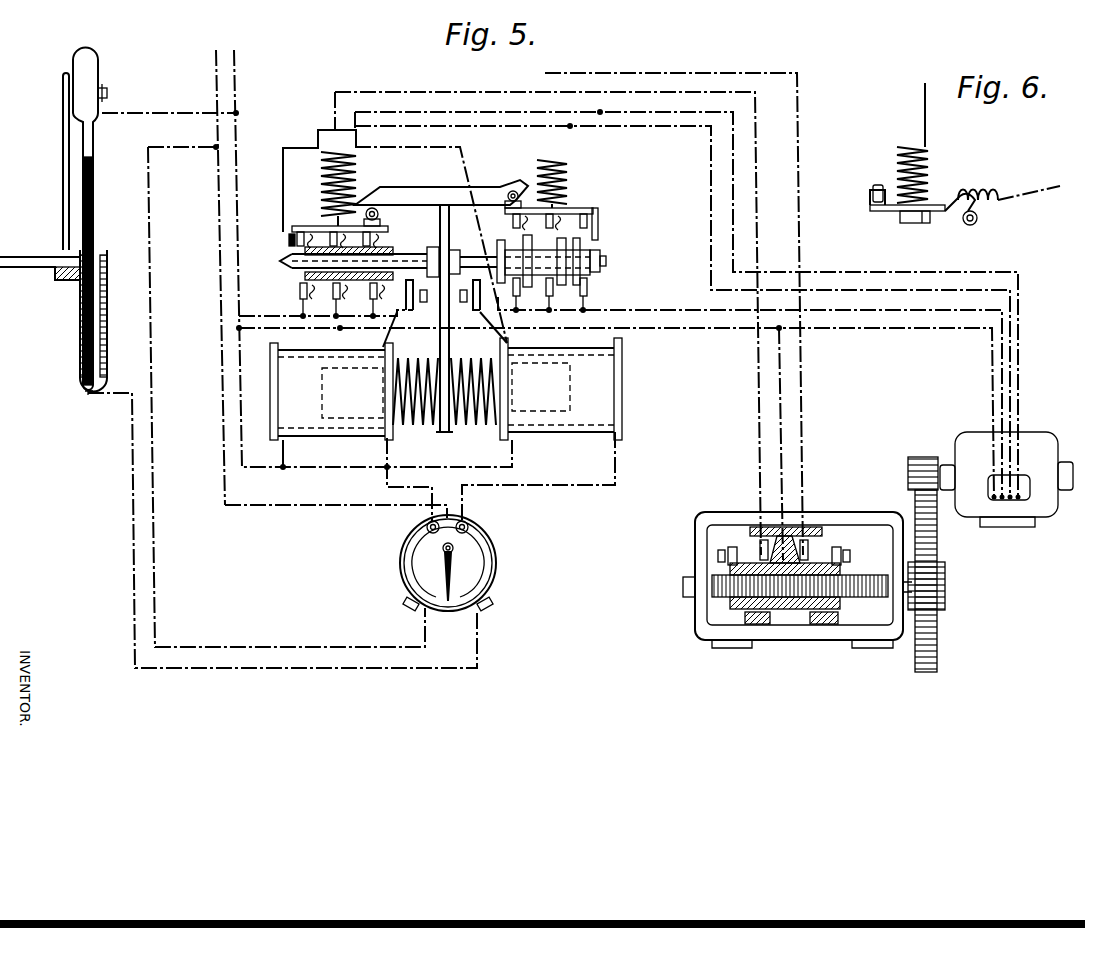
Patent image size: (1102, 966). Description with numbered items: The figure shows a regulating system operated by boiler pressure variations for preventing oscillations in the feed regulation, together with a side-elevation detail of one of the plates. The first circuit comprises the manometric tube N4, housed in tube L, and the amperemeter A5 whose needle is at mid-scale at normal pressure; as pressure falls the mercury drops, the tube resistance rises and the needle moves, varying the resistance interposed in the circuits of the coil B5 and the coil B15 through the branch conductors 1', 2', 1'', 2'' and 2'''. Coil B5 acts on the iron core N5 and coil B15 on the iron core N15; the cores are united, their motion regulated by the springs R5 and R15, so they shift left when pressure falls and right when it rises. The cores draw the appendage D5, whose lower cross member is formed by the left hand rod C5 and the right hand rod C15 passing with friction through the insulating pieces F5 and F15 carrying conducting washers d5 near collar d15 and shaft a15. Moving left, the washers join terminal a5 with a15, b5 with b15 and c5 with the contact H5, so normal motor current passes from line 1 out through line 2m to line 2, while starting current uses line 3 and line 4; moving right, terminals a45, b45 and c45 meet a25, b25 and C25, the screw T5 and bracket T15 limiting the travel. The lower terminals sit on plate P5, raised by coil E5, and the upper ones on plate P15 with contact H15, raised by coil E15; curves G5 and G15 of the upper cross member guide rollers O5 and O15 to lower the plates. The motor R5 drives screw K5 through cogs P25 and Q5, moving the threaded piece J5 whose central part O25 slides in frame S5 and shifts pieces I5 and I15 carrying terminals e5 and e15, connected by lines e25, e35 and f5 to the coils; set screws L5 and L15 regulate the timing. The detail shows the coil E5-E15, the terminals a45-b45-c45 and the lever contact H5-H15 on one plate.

In FIG. 5, the line 1 is at (548, 277).
In FIG. 5, the line 2 is at (373, 260).
In FIG. 5, the line 3 is at (1012, 388).
In FIG. 5, the line 4 is at (1020, 358).
In FIG. 5, the branch conductor 1' is at (286, 397).
In FIG. 5, the branch conductor 2' is at (304, 530).
In FIG. 5, the branch conductor 1'' is at (353, 553).
In FIG. 5, the branch conductor 2'' is at (413, 485).
In FIG. 5, the branch conductor 2''' is at (535, 482).
In FIG. 5, the line 2m is at (650, 311).
In FIG. 5, the manometer tube L is at (62, 152).
In FIG. 5, the manometric tube N4 is at (93, 185).
In FIG. 5, the amperemeter A5 is at (448, 563).
In FIG. 5, the coil E5 is at (322, 178).
In FIG. 5, the plate P5 is at (296, 226).
In FIG. 5, the contact H5 is at (289, 238).
In FIG. 5, the curve G5 is at (378, 210).
In FIG. 5, the roller O5 is at (375, 208).
In FIG. 6, the roller O5 is at (875, 188).
In FIG. 5, the terminal b15 is at (372, 205).
In FIG. 5, the right hand rod C15 is at (395, 205).
In FIG. 5, the curve G15 is at (500, 195).
In FIG. 5, the roller O15 is at (515, 190).
In FIG. 5, the second coil E15 is at (560, 170).
In FIG. 5, the plate P15 is at (592, 210).
In FIG. 6, the plate P15 is at (878, 212).
In FIG. 5, the contact H15 is at (598, 236).
In FIG. 5, the terminal a15 is at (290, 256).
In FIG. 5, the washers d5 is at (302, 275).
In FIG. 5, the left hand rod C5 is at (300, 270).
In FIG. 5, the collar d15 is at (497, 248).
In FIG. 5, the appendage D5 is at (440, 348).
In FIG. 5, the terminal a25 is at (525, 260).
In FIG. 5, the terminal b25 is at (564, 259).
In FIG. 5, the terminal C25 is at (590, 258).
In FIG. 5, the piece F15 is at (586, 280).
In FIG. 5, the piece F5 is at (300, 290).
In FIG. 5, the terminal a5 is at (300, 298).
In FIG. 5, the terminal b5 is at (333, 298).
In FIG. 5, the terminal c5 is at (370, 298).
In FIG. 5, the screw T5 is at (409, 313).
In FIG. 5, the contact bracket T15 is at (481, 311).
In FIG. 5, the terminal a45 is at (533, 295).
In FIG. 5, the terminal b45 is at (568, 295).
In FIG. 5, the terminal c45 is at (588, 300).
In FIG. 5, the coil B5 is at (285, 415).
In FIG. 5, the iron core N5 is at (322, 390).
In FIG. 5, the coil B15 is at (605, 410).
In FIG. 5, the iron core N15 is at (570, 393).
In FIG. 5, the spring / motor R5 is at (415, 425).
In FIG. 5, the spring R15 is at (475, 425).
In FIG. 5, the line e25 is at (757, 372).
In FIG. 5, the line e35 is at (801, 372).
In FIG. 5, the conductor f5 is at (779, 405).
In FIG. 5, the cog P25 is at (920, 460).
In FIG. 5, the terminal e5 is at (757, 542).
In FIG. 5, the frame S5 is at (812, 515).
In FIG. 5, the terminal e15 is at (820, 540).
In FIG. 5, the set screw L5 is at (718, 557).
In FIG. 5, the set screw L15 is at (850, 560).
In FIG. 5, the screw K5 is at (850, 600).
In FIG. 5, the piece I5 is at (760, 626).
In FIG. 5, the central part O25 is at (785, 600).
In FIG. 5, the piece J5 is at (790, 612).
In FIG. 5, the piece I15 is at (815, 626).
In FIG. 5, the cog Q5 is at (944, 581).
In FIG. 6, the coil E5-E15 is at (908, 143).
In FIG. 6, the terminals a45-b45-c45 is at (912, 223).
In FIG. 6, the lever contact H5-H15 is at (980, 220).